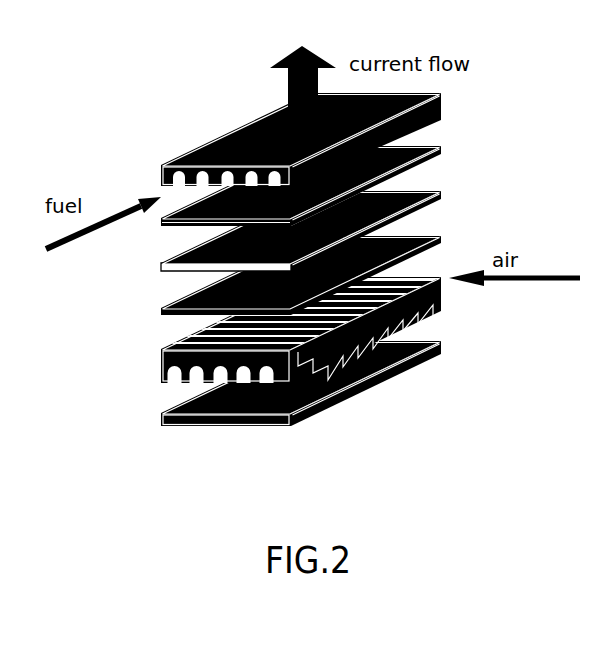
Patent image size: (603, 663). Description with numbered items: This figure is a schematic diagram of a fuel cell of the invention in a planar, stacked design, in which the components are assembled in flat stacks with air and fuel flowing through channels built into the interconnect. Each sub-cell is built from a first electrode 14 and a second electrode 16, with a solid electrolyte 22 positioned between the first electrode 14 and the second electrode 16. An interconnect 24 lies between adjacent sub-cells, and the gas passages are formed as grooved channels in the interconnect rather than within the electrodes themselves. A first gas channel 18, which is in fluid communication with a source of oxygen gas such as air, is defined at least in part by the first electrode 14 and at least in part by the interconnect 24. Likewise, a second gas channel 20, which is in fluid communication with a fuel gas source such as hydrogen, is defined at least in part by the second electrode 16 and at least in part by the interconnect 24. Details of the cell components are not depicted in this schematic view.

The first electrode 14 is at (400, 237).
The second electrode 16 is at (400, 136).
The first gas channel 18 is at (295, 343).
The second gas channel 20 is at (156, 178).
The solid electrolyte 22 is at (433, 193).
The interconnect 24 is at (240, 130).